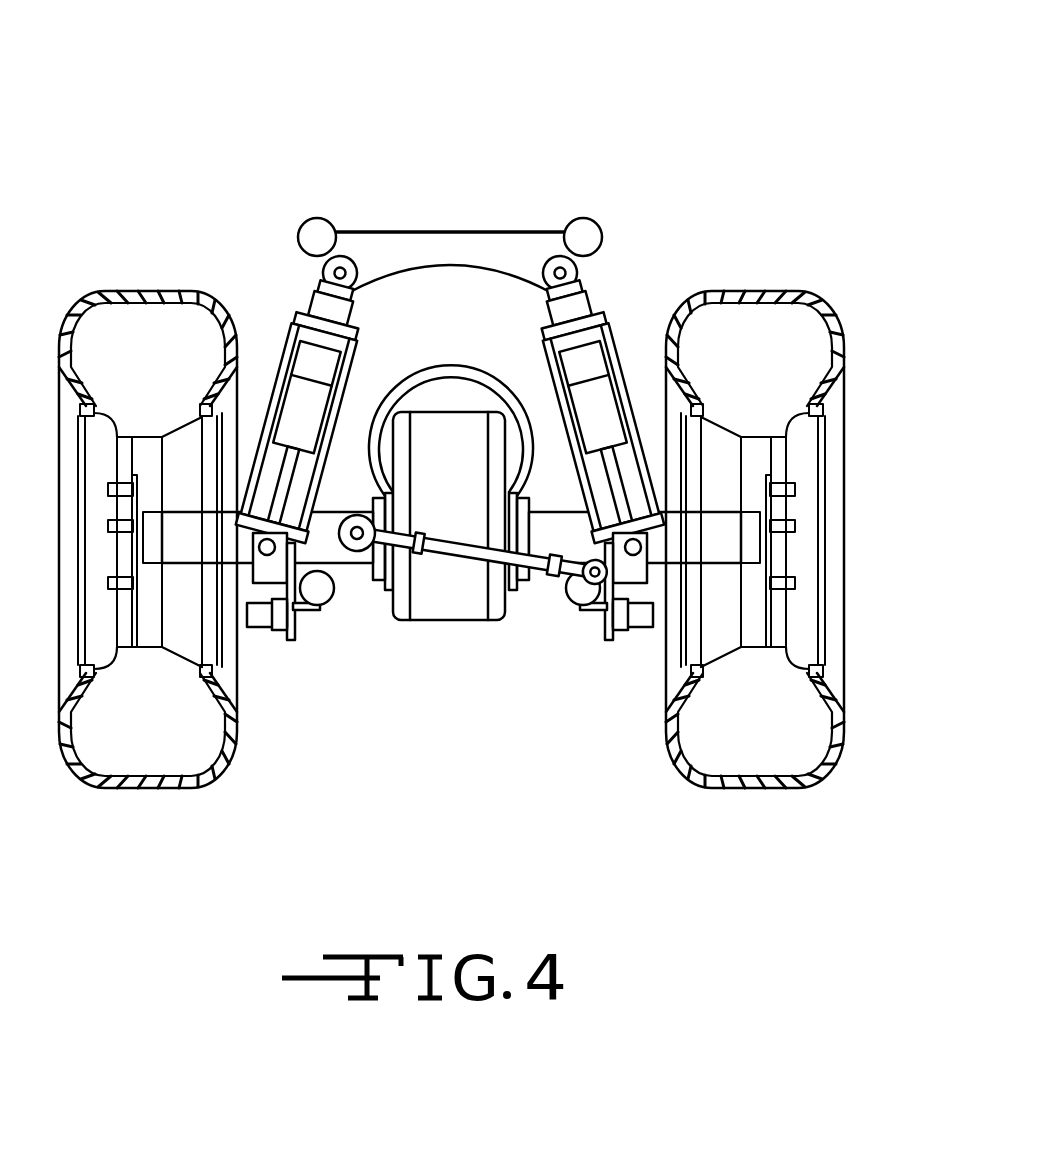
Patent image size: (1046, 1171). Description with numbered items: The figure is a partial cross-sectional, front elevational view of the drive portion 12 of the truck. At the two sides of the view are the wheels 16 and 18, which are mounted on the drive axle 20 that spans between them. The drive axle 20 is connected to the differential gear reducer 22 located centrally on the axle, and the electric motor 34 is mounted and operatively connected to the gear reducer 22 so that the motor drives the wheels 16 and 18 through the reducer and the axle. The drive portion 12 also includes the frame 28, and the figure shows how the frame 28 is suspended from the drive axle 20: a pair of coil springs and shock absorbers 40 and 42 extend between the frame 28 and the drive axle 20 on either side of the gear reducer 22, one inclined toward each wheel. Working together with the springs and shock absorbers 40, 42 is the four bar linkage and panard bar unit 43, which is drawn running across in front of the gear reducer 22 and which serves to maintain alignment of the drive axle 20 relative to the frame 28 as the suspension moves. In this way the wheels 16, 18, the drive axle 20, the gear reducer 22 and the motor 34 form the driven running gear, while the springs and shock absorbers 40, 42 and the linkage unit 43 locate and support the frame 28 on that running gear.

The drive portion 12 is at (745, 88).
The wheel 16 is at (756, 288).
The wheel 18 is at (124, 290).
The drive axle 20 is at (665, 553).
The differential gear reducer 22 is at (418, 598).
The frame 28 is at (262, 593).
The electric motor 34 is at (442, 368).
The coil spring and shock absorber 40 is at (304, 320).
The coil spring and shock absorber 42 is at (602, 327).
The four bar linkage and panard bar unit 43 is at (543, 578).